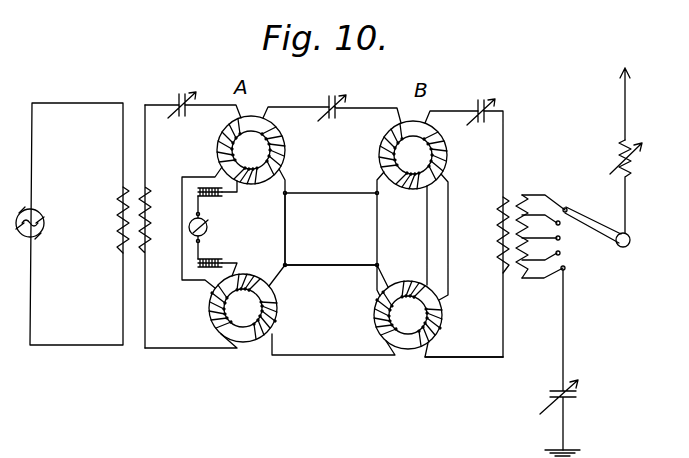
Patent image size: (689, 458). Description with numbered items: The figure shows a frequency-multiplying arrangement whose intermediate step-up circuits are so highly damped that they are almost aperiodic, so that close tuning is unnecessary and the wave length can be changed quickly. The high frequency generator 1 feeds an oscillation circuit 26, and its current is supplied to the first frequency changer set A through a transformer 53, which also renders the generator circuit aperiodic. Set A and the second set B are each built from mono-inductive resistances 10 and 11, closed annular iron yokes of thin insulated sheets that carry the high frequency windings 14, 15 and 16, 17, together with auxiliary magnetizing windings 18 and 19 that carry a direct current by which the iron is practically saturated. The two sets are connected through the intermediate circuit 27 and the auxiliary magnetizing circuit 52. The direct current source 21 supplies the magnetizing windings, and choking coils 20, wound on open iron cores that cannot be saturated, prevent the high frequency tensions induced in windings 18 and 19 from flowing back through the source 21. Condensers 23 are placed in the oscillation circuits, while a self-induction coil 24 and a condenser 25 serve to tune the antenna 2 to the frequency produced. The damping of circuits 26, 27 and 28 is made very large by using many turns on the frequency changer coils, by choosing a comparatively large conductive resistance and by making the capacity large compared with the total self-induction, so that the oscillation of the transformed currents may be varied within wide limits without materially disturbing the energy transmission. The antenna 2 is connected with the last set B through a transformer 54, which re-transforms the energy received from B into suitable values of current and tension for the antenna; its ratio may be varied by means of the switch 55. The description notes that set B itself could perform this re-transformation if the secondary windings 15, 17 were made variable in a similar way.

The high frequency generator 1 is at (38, 221).
The antenna 2 is at (623, 109).
The mono-inductive resistance 10 is at (332, 152).
The mono-inductive resistance 11 is at (325, 311).
The winding 14 is at (298, 143).
The winding 15 is at (287, 147).
The winding 16 is at (292, 310).
The winding 17 is at (280, 316).
The auxiliary magnetizing winding 18 is at (327, 192).
The auxiliary magnetizing winding 19 is at (331, 276).
The choking coil 20 is at (197, 193).
The direct current source 21 is at (210, 227).
The condenser 23 is at (331, 99).
The self-induction coil 24 is at (618, 186).
The condenser 25 is at (548, 395).
The oscillation circuit 26 is at (33, 143).
The intermediate circuit 27 is at (285, 236).
The oscillation circuit 28 is at (467, 358).
The auxiliary magnetizing circuit 52 is at (331, 275).
The transformer 53 is at (113, 220).
The transformer 54 is at (521, 236).
The switch 55 is at (594, 224).